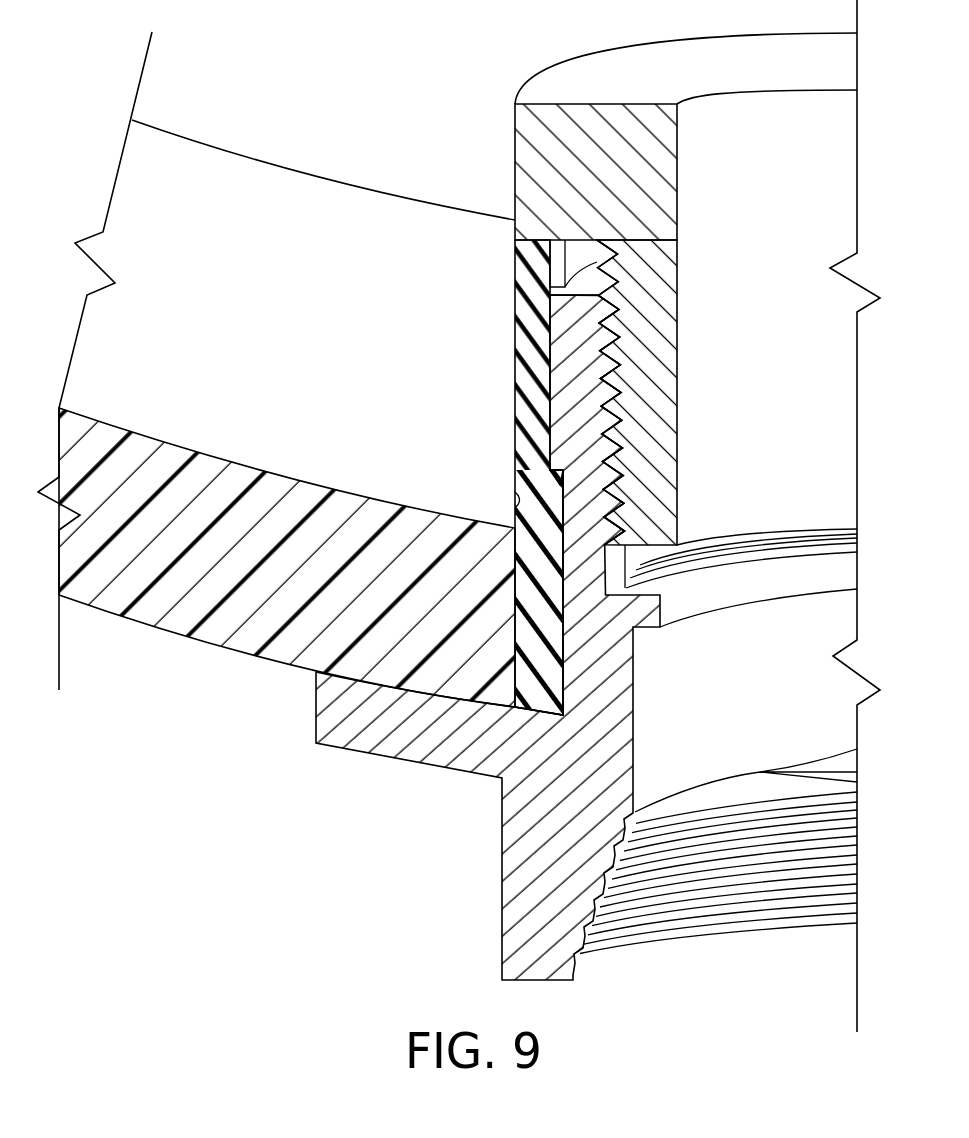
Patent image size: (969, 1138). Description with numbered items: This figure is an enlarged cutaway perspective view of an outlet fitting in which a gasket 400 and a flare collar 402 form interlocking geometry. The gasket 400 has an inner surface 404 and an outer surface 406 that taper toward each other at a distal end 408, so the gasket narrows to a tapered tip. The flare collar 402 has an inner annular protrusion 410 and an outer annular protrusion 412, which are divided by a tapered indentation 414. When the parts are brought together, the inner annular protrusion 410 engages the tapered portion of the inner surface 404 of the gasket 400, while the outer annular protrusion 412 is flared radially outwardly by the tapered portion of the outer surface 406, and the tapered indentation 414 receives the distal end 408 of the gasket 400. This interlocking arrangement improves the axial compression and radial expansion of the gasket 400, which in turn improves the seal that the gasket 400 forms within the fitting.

The gasket 400 is at (508, 607).
The flare collar 402 is at (493, 347).
The inner surface 404 is at (515, 635).
The outer surface 406 is at (515, 587).
The distal end 408 is at (508, 503).
The inner annular protrusion 410 is at (548, 468).
The outer annular protrusion 412 is at (515, 492).
The tapered indentation 414 is at (538, 474).